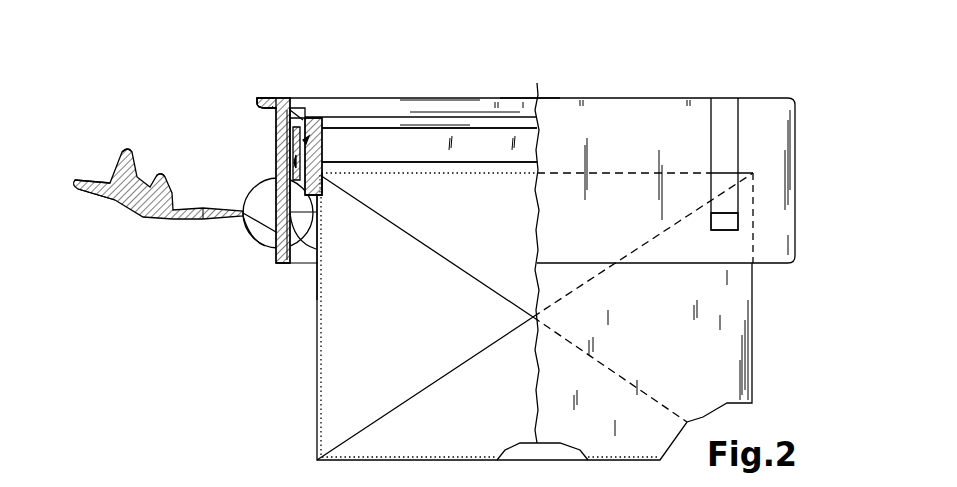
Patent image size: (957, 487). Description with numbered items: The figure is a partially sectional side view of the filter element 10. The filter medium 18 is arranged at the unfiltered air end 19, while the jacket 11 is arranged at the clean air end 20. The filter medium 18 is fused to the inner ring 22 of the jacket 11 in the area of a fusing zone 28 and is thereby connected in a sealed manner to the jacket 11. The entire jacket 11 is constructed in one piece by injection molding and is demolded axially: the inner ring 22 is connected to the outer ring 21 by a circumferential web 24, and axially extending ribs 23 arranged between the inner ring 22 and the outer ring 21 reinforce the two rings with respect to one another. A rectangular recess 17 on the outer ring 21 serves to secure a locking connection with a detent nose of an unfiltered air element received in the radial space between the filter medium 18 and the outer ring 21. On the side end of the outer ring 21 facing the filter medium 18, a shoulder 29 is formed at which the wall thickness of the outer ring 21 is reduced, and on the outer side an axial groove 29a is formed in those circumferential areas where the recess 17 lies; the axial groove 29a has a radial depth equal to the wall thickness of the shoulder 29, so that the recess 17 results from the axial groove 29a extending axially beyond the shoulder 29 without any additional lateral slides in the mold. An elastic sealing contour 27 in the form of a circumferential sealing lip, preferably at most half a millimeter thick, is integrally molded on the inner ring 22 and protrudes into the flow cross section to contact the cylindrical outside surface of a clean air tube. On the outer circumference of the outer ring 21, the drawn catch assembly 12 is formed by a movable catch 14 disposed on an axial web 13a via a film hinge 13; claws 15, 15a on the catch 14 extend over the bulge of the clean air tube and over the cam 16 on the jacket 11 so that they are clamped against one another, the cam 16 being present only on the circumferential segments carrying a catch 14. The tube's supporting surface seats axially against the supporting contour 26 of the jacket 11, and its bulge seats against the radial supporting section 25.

The filter element 10 is at (272, 337).
The jacket 11 is at (590, 114).
The spring strip 12 is at (116, 207).
The film hinge 13 is at (242, 216).
The axial web 13a is at (264, 237).
The catch 14 is at (109, 182).
The claw 15 is at (129, 151).
The claw 15a is at (166, 176).
The cam 16 is at (262, 99).
The rectangular recess 17 is at (730, 224).
The filter medium 18 is at (718, 351).
The unfiltered air end 19 is at (545, 470).
The clean air end 20 is at (549, 61).
The outer ring 21 is at (776, 122).
The inner ring 22 is at (312, 115).
The ribs 23 is at (294, 147).
The circumferential web 24 is at (303, 120).
The radial supporting section 25 is at (296, 112).
The supporting contour 26 is at (306, 117).
The elastic sealing contour 27 is at (343, 150).
The fusing zone 28 is at (326, 197).
The shoulder 29 is at (331, 247).
The axial groove 29a is at (724, 108).